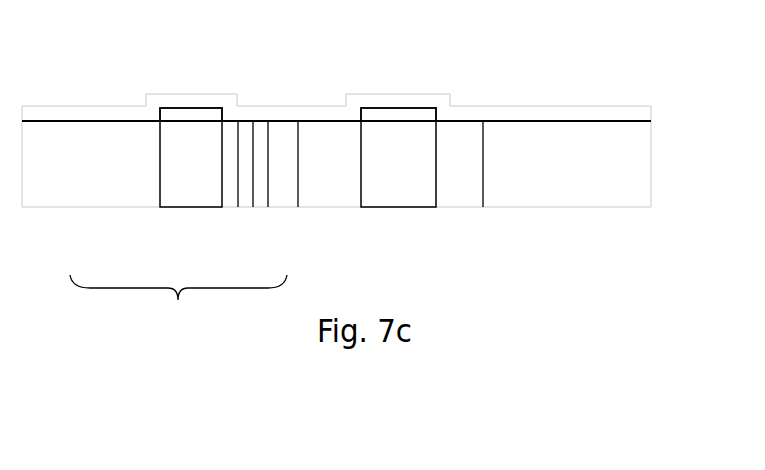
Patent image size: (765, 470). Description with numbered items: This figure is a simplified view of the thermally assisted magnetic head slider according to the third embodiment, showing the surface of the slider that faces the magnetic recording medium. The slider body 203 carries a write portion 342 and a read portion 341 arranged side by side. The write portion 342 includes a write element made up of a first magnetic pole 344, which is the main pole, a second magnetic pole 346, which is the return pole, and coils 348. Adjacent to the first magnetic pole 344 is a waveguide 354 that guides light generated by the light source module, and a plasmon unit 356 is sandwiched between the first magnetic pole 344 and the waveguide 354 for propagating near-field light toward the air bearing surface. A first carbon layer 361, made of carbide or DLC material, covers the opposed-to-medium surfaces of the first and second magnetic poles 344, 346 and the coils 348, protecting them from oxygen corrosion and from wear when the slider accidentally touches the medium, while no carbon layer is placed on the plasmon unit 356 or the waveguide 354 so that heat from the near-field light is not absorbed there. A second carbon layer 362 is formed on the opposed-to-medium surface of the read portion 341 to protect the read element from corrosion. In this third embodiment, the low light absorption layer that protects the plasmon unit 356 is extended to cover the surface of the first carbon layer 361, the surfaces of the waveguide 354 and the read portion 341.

The substrate 203 is at (542, 130).
The first carbon layer 361 is at (187, 115).
The second carbon layer 362 is at (403, 113).
The first magnetic pole 344 is at (140, 188).
The second magnetic pole 346 is at (191, 157).
The coils 348 is at (194, 197).
The plasmon unit 356 is at (245, 197).
The waveguide 354 is at (286, 197).
The write portion 342 is at (178, 184).
The read portion 341 is at (397, 197).